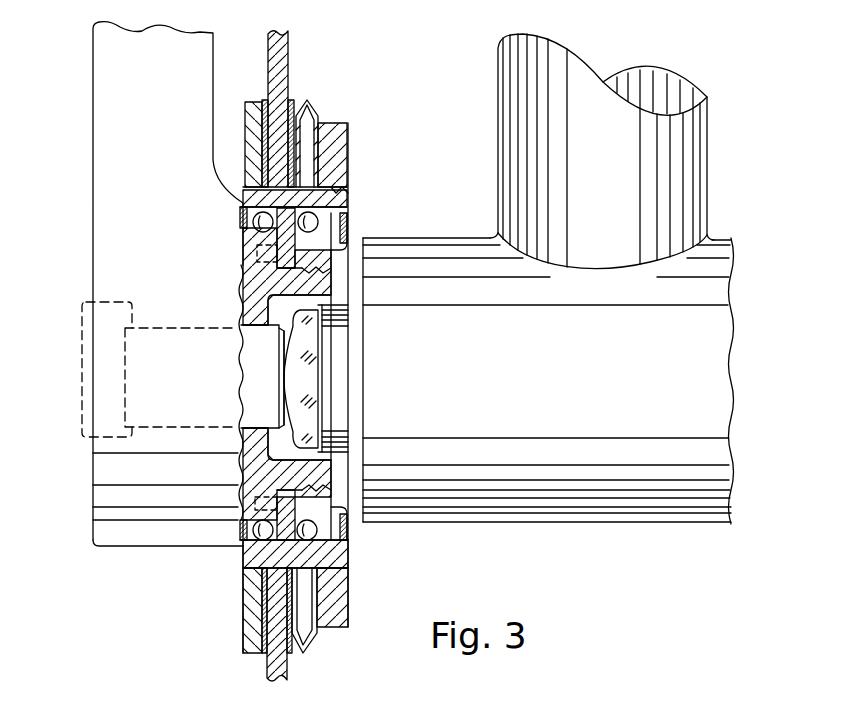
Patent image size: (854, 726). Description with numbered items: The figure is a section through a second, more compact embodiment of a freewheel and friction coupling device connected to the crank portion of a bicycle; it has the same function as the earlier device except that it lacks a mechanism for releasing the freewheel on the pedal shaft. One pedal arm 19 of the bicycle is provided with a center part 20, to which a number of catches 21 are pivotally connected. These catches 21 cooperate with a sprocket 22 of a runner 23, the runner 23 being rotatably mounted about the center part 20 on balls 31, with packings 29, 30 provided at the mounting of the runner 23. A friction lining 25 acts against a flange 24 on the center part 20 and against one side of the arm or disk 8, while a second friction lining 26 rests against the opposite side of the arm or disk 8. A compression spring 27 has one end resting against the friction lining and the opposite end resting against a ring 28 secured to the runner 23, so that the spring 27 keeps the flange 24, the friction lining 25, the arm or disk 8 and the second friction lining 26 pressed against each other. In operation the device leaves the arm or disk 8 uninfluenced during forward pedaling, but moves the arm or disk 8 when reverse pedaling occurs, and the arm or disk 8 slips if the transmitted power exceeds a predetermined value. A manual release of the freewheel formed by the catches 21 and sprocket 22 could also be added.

The arm or disk 8 is at (282, 52).
The pedal arm 19 is at (108, 207).
The center part 20 is at (253, 295).
The catches 21 is at (292, 253).
The sprocket 22 is at (338, 208).
The runner 23 is at (310, 200).
The flange 24 is at (247, 102).
The friction lining 25 is at (281, 112).
The second friction lining 26 is at (298, 108).
The compression spring 27 is at (319, 122).
The ring 28 is at (349, 185).
The packing 29 is at (258, 534).
The packing 30 is at (344, 520).
The balls 31 is at (305, 538).